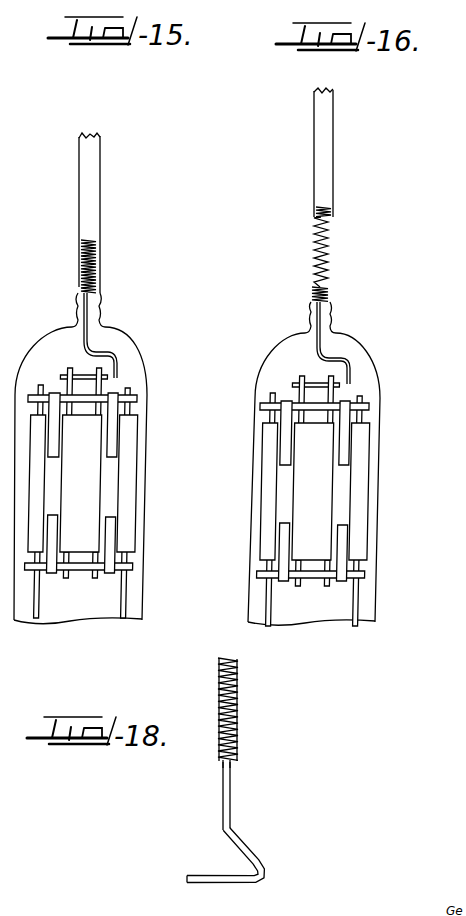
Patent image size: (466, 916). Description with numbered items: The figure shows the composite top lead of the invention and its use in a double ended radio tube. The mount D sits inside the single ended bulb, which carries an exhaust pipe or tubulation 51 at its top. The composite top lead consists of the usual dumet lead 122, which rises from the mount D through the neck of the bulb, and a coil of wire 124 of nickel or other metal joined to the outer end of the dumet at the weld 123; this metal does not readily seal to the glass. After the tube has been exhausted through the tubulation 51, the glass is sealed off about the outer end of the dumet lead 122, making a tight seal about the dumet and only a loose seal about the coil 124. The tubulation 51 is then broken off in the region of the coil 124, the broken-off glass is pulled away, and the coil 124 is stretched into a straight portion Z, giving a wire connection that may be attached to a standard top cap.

In FIG. 15, the exhaust pipe or tubulation 51 is at (97, 194).
In FIG. 15, the coil of wire 124 is at (90, 267).
In FIG. 16, the coil of wire 124 is at (326, 276).
In FIG. 18, the coil of wire 124 is at (235, 712).
In FIG. 15, the dumet lead 122 is at (113, 367).
In FIG. 16, the dumet lead 122 is at (345, 372).
In FIG. 18, the dumet lead 122 is at (245, 850).
In FIG. 18, the weld 123 is at (220, 763).
In FIG. 18, the straight portion of coil Z is at (230, 777).
In FIG. 15, the mount D is at (88, 500).
In FIG. 16, the mount D is at (321, 503).